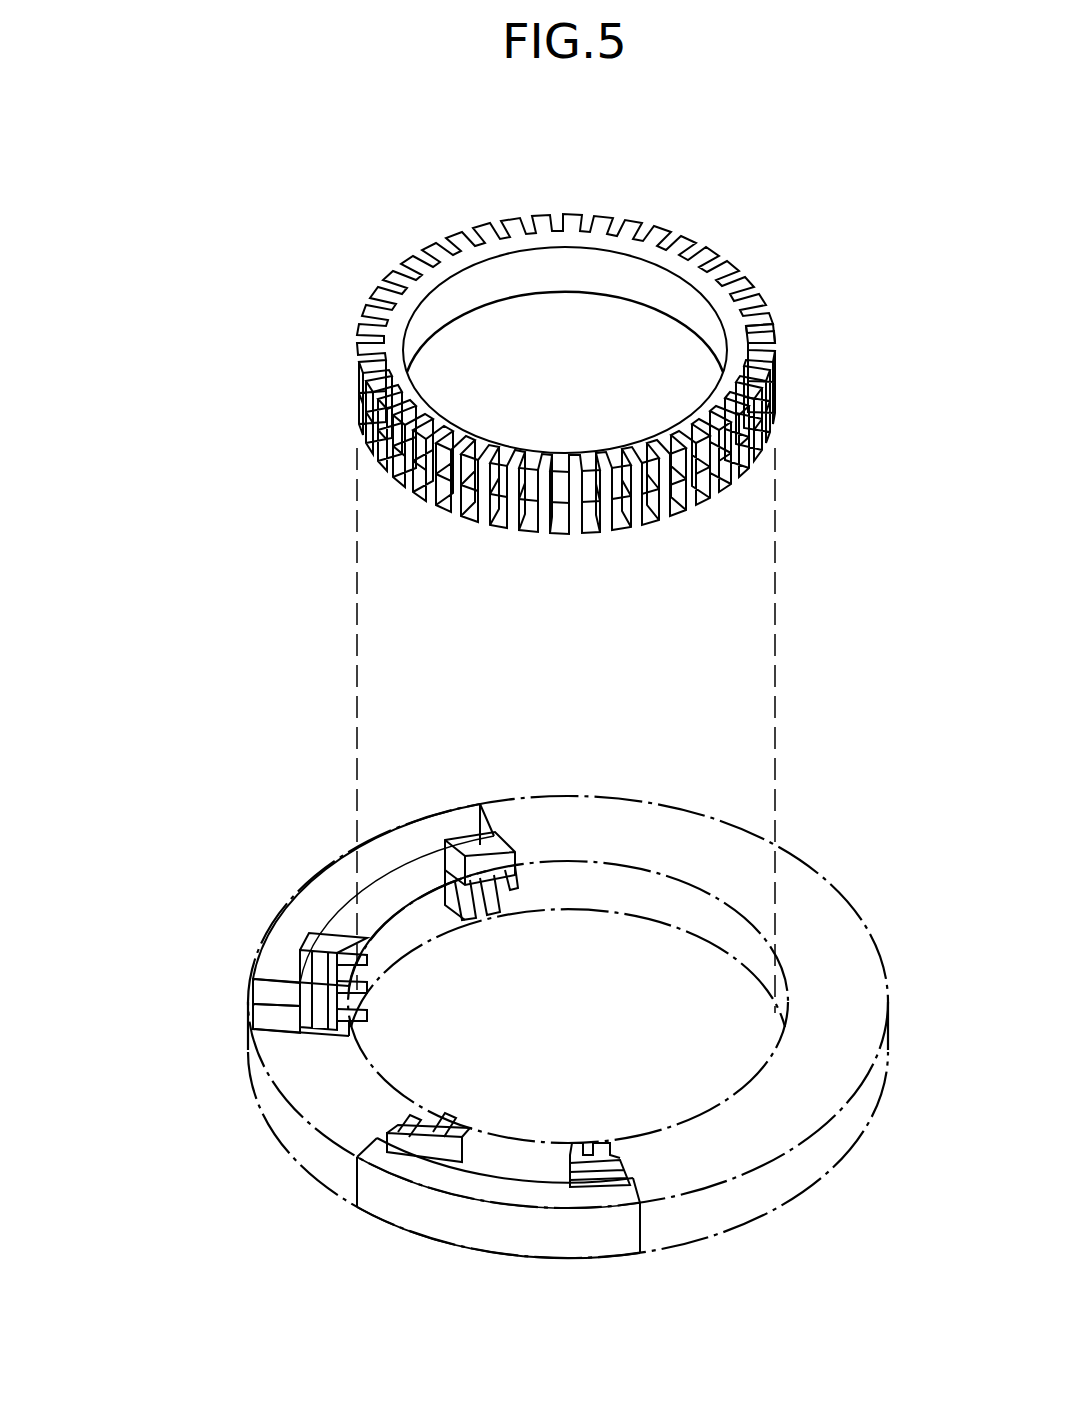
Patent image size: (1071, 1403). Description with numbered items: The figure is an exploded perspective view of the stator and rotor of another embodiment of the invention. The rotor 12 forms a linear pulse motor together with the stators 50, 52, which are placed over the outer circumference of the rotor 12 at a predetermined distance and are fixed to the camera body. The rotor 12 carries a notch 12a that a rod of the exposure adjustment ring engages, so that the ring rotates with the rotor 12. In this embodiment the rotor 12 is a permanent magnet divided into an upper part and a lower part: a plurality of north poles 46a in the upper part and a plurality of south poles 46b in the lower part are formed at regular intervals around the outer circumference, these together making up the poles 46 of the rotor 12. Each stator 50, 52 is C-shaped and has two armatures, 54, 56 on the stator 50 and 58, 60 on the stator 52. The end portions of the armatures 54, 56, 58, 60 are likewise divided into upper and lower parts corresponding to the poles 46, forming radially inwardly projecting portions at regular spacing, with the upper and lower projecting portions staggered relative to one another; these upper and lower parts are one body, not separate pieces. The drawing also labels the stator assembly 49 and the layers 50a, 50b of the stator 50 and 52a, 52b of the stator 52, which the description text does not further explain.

The rotor 12 is at (616, 407).
The notch 12a is at (760, 320).
The poles 46 is at (567, 507).
The north poles 46a is at (512, 518).
The south poles 46b is at (475, 613).
The stator assembly 49 is at (518, 1056).
The stator 50 is at (426, 1239).
The upper layer of yoke segment 50 50a is at (357, 1170).
The lower layer of yoke segment 50 50b is at (415, 1222).
The stator 52 is at (320, 898).
The upper layer of yoke segment 52 52a is at (253, 990).
The lower layer of yoke segment 52 52b is at (253, 1018).
The armature 54 is at (595, 1185).
The armature 56 is at (400, 1142).
The armature 58 is at (300, 960).
The armature 60 is at (468, 838).